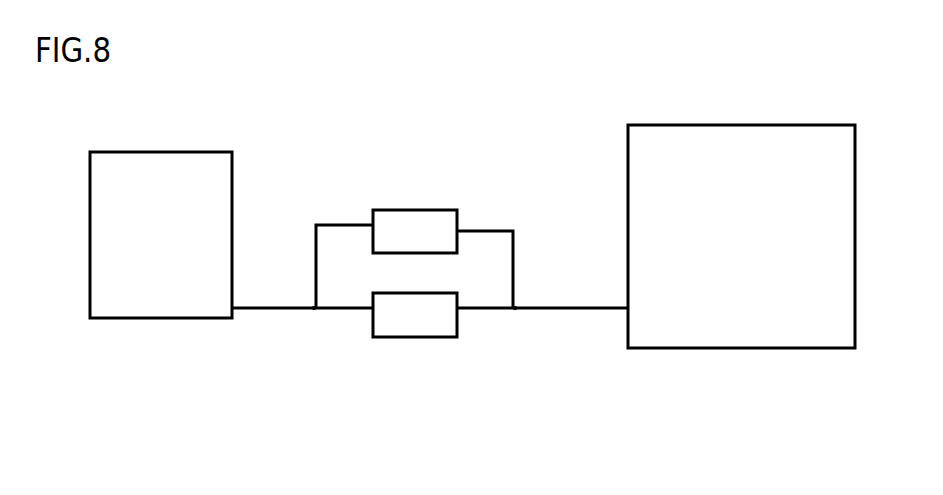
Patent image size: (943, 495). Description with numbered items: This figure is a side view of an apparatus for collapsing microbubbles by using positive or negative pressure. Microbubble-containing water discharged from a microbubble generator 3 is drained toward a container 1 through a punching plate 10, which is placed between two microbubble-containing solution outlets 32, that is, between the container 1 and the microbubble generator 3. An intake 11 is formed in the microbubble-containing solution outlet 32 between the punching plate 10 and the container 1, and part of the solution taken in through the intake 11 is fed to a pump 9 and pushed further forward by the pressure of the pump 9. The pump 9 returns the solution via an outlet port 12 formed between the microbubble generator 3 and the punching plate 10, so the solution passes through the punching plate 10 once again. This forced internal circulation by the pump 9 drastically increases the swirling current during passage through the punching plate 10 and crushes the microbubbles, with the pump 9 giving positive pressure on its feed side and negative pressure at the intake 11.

The container 1 is at (741, 218).
The microbubble generator 3 is at (161, 217).
The pump 9 is at (414, 246).
The punching plate 10 is at (415, 335).
The intake 11 is at (527, 294).
The outlet port 12 is at (298, 297).
The microbubble-containing solution outlet 32 is at (298, 320).